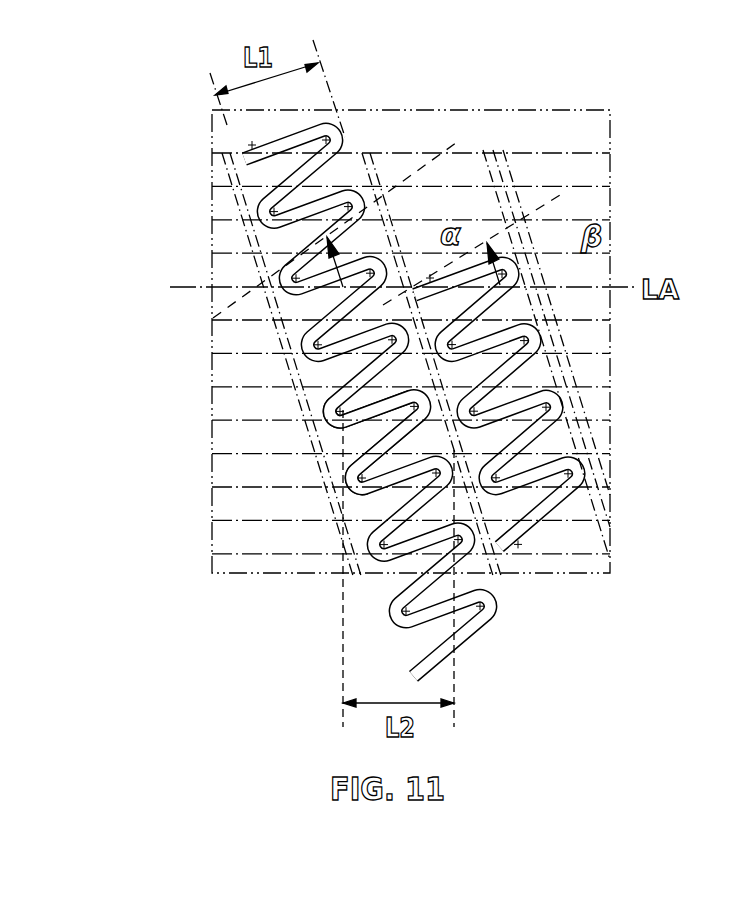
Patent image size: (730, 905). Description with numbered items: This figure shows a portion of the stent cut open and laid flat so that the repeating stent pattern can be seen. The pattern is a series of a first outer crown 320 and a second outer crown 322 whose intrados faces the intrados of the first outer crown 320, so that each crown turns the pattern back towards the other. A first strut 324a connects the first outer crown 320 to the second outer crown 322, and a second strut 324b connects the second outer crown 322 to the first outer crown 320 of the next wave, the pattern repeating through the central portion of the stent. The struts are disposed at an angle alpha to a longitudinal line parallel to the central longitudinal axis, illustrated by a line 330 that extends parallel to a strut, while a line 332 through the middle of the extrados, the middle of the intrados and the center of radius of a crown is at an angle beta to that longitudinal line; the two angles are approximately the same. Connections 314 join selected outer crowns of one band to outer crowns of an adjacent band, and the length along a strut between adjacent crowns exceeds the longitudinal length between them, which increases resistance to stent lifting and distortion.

The connection 314 is at (495, 440).
The first outer crown 320 is at (325, 410).
The second outer crown 322 is at (505, 370).
The first strut 324a is at (390, 398).
The second strut 324b is at (390, 442).
The line parallel to a strut 330 is at (428, 162).
The line through the crown 332 is at (538, 210).